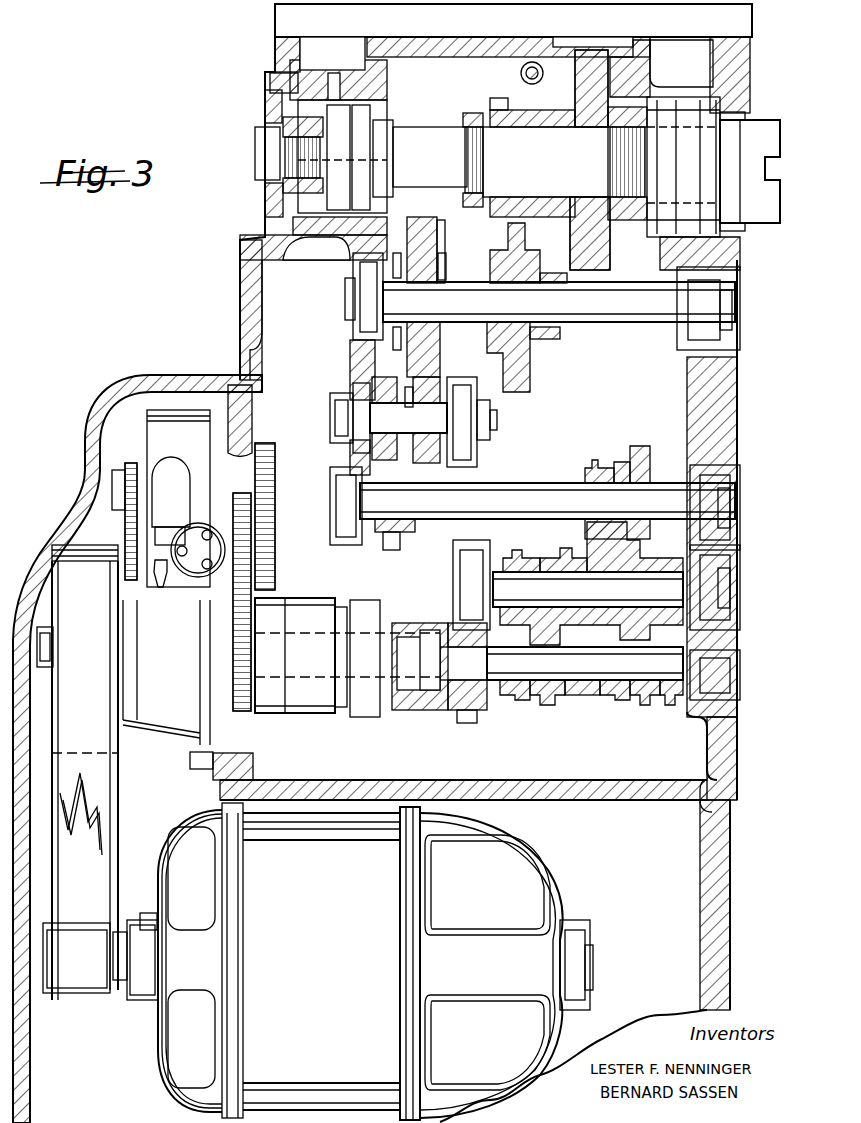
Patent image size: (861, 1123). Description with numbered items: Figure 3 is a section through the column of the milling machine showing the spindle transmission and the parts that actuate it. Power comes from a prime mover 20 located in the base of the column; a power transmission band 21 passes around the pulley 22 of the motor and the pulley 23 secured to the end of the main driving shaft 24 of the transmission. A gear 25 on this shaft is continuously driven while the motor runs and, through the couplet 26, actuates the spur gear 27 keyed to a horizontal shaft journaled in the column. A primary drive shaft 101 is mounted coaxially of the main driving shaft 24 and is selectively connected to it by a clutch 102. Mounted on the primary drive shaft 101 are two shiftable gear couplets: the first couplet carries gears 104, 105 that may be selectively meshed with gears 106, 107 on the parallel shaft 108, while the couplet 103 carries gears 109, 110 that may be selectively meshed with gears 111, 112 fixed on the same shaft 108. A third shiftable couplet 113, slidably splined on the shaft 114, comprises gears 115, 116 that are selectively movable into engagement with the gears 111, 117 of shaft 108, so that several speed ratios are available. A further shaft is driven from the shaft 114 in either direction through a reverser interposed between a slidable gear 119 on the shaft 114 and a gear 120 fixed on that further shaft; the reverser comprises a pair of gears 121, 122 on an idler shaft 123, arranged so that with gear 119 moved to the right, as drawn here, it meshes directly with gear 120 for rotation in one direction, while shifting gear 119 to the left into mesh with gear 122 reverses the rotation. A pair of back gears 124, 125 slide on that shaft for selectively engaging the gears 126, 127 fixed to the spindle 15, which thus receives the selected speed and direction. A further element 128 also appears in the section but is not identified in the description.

The spindle 15 is at (757, 137).
The prime mover 20 is at (448, 850).
The power transmission band 21 is at (100, 860).
The pulley 22 is at (115, 925).
The pulley 23 is at (45, 545).
The main driving shaft 24 is at (45, 640).
The gear 25 is at (240, 712).
The couplet 26 is at (265, 600).
The spur gear 27 is at (263, 442).
The primary drive shaft 101 is at (500, 690).
The clutch 102 is at (560, 695).
The shiftable gear couplet 103 is at (636, 705).
The gear 104 is at (520, 700).
The gear 105 is at (555, 705).
The gear 106 is at (548, 552).
The gear 107 is at (575, 556).
The parallel shaft 108 is at (500, 568).
The gear 109 is at (613, 700).
The gear 110 is at (658, 705).
The gear 111 is at (603, 665).
The gear 112 is at (653, 500).
The shiftable couplet 113 is at (592, 468).
The shaft 114 is at (556, 483).
The gear 115 is at (628, 462).
The gear 116 is at (640, 447).
The gear 117 is at (652, 505).
The slidable gear 119 is at (406, 540).
The gear 120 is at (437, 242).
The reverser gear 121 is at (442, 392).
The reverser gear 122 is at (365, 380).
The idler shaft 123 is at (437, 422).
The back gear 124 is at (527, 362).
The back gear 125 is at (553, 338).
The gear 126 is at (512, 105).
The gear 127 is at (578, 92).
The shaft 128 is at (633, 303).